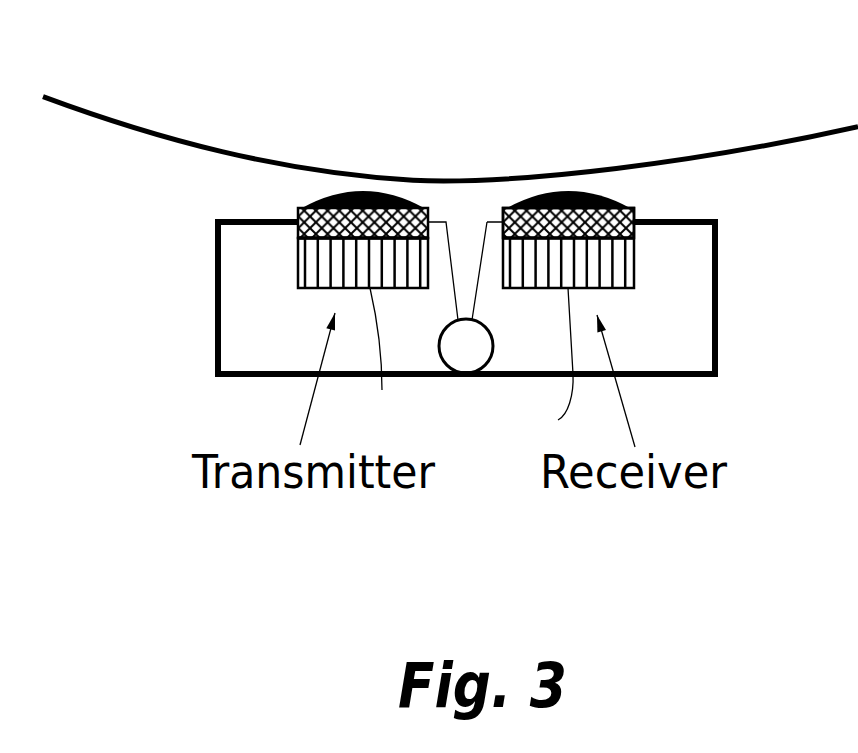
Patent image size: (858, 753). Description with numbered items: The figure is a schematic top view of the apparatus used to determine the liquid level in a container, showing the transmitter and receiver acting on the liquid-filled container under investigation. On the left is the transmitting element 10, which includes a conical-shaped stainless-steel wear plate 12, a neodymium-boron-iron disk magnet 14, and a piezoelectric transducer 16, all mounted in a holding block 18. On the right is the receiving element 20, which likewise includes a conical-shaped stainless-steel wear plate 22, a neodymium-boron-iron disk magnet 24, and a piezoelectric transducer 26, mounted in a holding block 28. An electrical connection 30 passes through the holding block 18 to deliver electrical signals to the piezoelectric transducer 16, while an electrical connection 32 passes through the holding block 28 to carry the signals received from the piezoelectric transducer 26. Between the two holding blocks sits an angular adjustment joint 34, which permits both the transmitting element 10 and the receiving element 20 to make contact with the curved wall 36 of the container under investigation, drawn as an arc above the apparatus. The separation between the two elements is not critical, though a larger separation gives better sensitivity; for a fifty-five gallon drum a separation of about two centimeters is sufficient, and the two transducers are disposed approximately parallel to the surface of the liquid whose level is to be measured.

The transmitting element 10 is at (298, 256).
The conical-shaped stainless-steel wear plate 12 is at (298, 208).
The neodymium-boron-iron disk magnet 14 is at (298, 216).
The piezoelectric transducer 16 is at (298, 273).
The holding block 18 is at (290, 338).
The receiving element 20 is at (638, 265).
The conical-shaped stainless-steel wear plate 22 is at (623, 197).
The neodymium-boron-iron disk magnet 24 is at (503, 210).
The piezoelectric transducer 26 is at (613, 277).
The holding block 28 is at (645, 338).
The electrical connection 30 is at (371, 362).
The electrical connection 32 is at (539, 367).
The angular adjustment joint 34 is at (466, 358).
The wall 36 is at (770, 147).